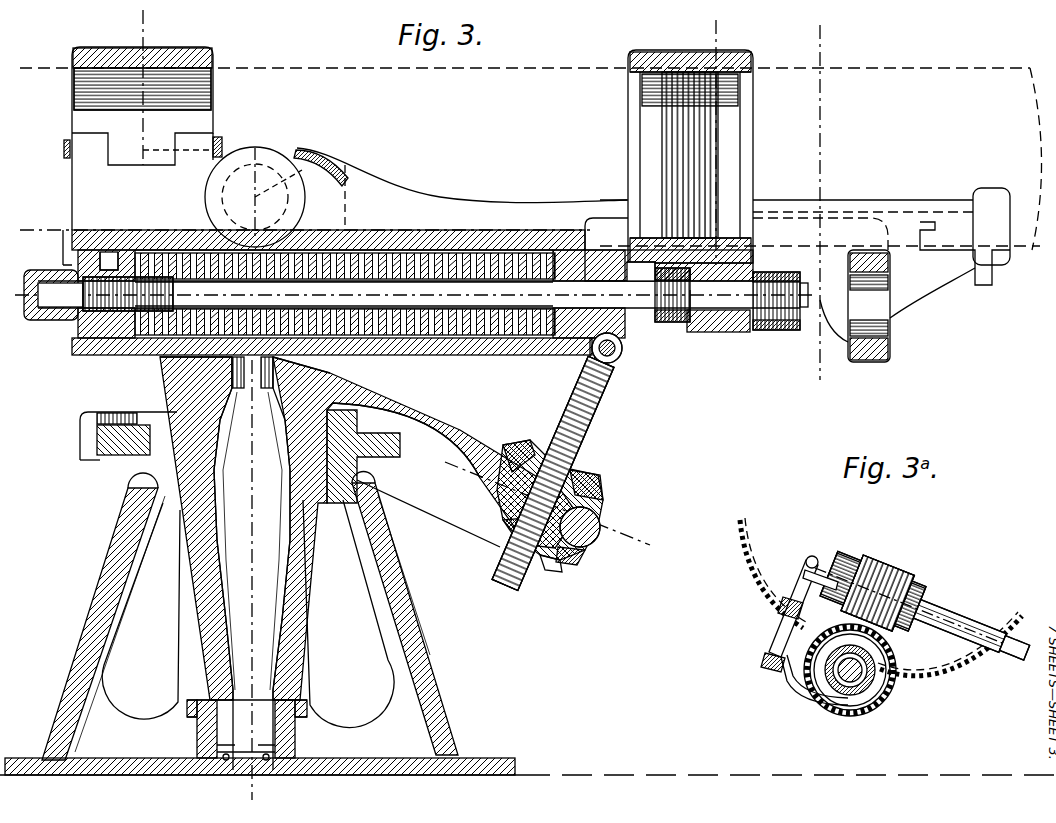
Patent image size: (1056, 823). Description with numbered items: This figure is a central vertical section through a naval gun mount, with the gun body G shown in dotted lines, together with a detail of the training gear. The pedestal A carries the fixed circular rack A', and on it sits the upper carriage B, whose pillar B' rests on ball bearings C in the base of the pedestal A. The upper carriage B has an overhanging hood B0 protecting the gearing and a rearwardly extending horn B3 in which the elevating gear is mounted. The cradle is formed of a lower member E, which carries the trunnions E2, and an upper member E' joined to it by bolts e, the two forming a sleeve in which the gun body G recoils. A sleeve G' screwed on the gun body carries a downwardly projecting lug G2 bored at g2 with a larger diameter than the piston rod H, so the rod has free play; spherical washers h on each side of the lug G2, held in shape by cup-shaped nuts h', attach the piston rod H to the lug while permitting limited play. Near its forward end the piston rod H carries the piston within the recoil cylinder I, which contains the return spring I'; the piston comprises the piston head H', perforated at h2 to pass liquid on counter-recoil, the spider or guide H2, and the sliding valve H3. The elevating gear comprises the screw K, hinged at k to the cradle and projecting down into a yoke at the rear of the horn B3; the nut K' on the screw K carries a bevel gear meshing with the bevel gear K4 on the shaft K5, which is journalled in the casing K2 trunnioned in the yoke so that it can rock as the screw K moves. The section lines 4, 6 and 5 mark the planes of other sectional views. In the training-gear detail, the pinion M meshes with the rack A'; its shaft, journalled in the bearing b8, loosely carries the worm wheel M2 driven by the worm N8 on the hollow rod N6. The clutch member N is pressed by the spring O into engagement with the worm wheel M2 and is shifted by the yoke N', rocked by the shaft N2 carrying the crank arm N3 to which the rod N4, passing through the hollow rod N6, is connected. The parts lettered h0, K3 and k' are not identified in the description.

In FIG. 3, the section line 4— 4 is at (90, 32).
In FIG. 3, the upper member of the cradle E' is at (161, 138).
In FIG. 3, the bolts e is at (66, 158).
In FIG. 3, the trunnions E2 is at (270, 152).
In FIG. 3, the lower member of the cradle E is at (462, 181).
In FIG. 3, the gun body G is at (634, 156).
In FIG. 3, the sleeve G' is at (786, 112).
In FIG. 3, the section line 6— 6 is at (745, 33).
In FIG. 3, the return spring I' is at (350, 204).
In FIG. 3, the recoil cylinder I is at (480, 309).
In FIG. 3, the piston rod H is at (415, 294).
In FIG. 3, the piston head H' is at (68, 295).
In FIG. 3, the spider or guide H2 is at (72, 240).
In FIG. 3, the sliding valve H3 is at (92, 332).
In FIG. 3, the perforations h2 is at (112, 262).
In FIG. 3, the bearing lug h0 is at (163, 262).
In FIG. 3, the spherical washers h is at (727, 333).
In FIG. 3, the downwardly projecting lug G2 is at (735, 332).
In FIG. 3, the bore g2 is at (710, 333).
In FIG. 3, the cup-shaped nuts h' is at (719, 319).
In FIG. 3, the upper carriage B is at (345, 563).
In FIG. 3, the rearwardly extending horn B3 is at (413, 475).
In FIG. 3, the section line 5— 5 is at (548, 501).
In FIG. 3, the fixed circular rack A' is at (112, 458).
In FIG. 3A, the fixed circular rack A' is at (859, 597).
In FIG. 3, the overhanging hood B0 is at (92, 430).
In FIG. 3, the pedestal A is at (260, 623).
In FIG. 3, the pillar B' is at (248, 614).
In FIG. 3, the ball bearings C is at (205, 747).
In FIG. 3, the screw K is at (557, 461).
In FIG. 3, the nut K' is at (560, 497).
In FIG. 3, the bevel gear K4 is at (532, 448).
In FIG. 3, the clamp wedge K3 is at (600, 490).
In FIG. 3, the hinge k is at (601, 440).
In FIG. 3, the casing K2 is at (585, 550).
In FIG. 3, the shaft K5 is at (520, 522).
In FIG. 3, the pin k' is at (554, 582).
In FIG. 3A, the pinion M is at (832, 686).
In FIG. 3A, the worm wheel M2 is at (870, 692).
In FIG. 3A, the spring O is at (847, 684).
In FIG. 3A, the clutch member N is at (845, 692).
In FIG. 3A, the yoke N' is at (765, 633).
In FIG. 3A, the worm N8 is at (870, 575).
In FIG. 3A, the hollow rod N6 is at (955, 628).
In FIG. 3A, the rod N4 is at (1015, 657).
In FIG. 3A, the crank arm N3 is at (806, 572).
In FIG. 3A, the shaft N2 is at (785, 610).
In FIG. 3A, the bearing b8 is at (768, 662).